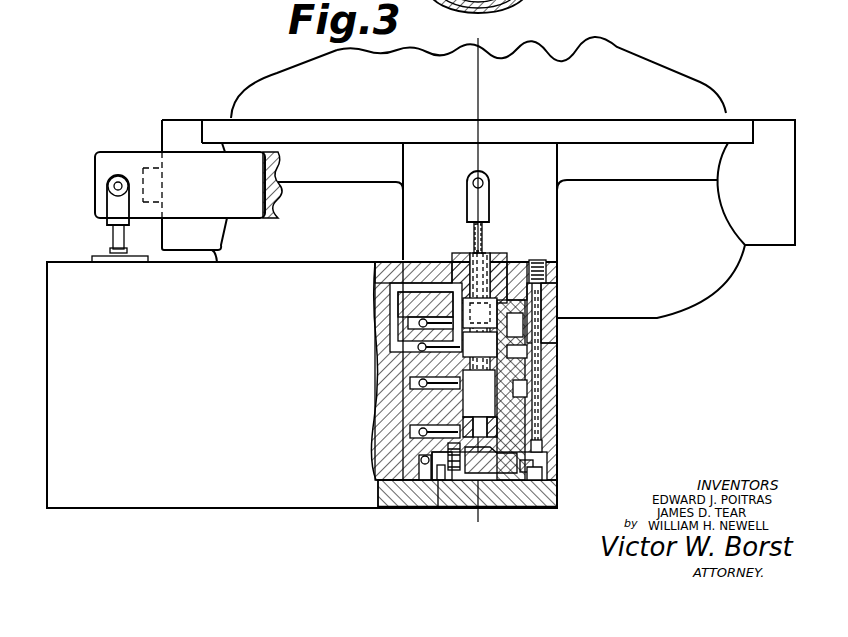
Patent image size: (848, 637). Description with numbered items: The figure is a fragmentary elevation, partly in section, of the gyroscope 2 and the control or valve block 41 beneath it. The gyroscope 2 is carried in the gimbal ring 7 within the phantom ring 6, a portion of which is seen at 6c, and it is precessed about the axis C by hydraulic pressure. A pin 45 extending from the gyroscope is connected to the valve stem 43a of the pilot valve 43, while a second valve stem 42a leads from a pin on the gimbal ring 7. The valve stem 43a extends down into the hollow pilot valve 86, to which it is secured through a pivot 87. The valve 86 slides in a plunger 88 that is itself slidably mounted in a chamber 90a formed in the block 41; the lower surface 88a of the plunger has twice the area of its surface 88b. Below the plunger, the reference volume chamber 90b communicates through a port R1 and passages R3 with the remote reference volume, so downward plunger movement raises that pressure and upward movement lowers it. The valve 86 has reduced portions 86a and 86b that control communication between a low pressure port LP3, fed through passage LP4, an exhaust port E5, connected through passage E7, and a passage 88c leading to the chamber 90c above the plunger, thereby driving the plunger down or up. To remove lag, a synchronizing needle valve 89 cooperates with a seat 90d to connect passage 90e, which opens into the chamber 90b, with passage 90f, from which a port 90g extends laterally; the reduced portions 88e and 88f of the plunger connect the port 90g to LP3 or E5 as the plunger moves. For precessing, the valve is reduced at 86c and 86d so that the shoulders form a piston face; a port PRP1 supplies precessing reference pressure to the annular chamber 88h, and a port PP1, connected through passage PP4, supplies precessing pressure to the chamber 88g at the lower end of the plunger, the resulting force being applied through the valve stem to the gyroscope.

The gyroscope 2 is at (276, 82).
The phantom ring 6 is at (310, 6).
The ring portion 6c is at (571, 12).
The axis C— C is at (475, 268).
The gimbal ring 7 is at (100, 164).
The control or valve block 41 is at (78, 271).
The valve stem 42a is at (87, 231).
The pilot valve 43 is at (491, 238).
The valve stem 43a is at (477, 231).
The pin 45 is at (476, 181).
The pilot valve 86 is at (491, 250).
The reduced portion 86a is at (558, 356).
The reduced portion 86b is at (557, 442).
The reduced diameter portion 86c is at (508, 262).
The reduced diameter portion 86d is at (505, 257).
The pivot 87 is at (566, 305).
The plunger 88 is at (557, 483).
The lower surface 88a is at (542, 473).
The surface 88b is at (398, 260).
The passage 88c is at (559, 362).
The reduced portion 88e is at (557, 346).
The reduced portion 88f is at (562, 382).
The chamber 88g is at (503, 472).
The annular chamber 88h is at (443, 260).
The synchronizing valve 89 is at (558, 316).
The plunger chamber 90a is at (560, 420).
The reference volume chamber 90b is at (467, 476).
The chamber 90c is at (554, 296).
The valve seat 90d is at (557, 447).
The passage 90e is at (560, 464).
The passage 90f is at (565, 392).
The port 90g is at (560, 372).
The port PRP1 is at (371, 258).
The passage LP4 is at (420, 313).
The low pressure port LP3 is at (372, 357).
The passage E7 is at (417, 378).
The exhaust port E5 is at (377, 400).
The passage PP4 is at (370, 433).
The port PP1 is at (373, 457).
The passages R3 is at (373, 483).
The port R1 is at (392, 507).